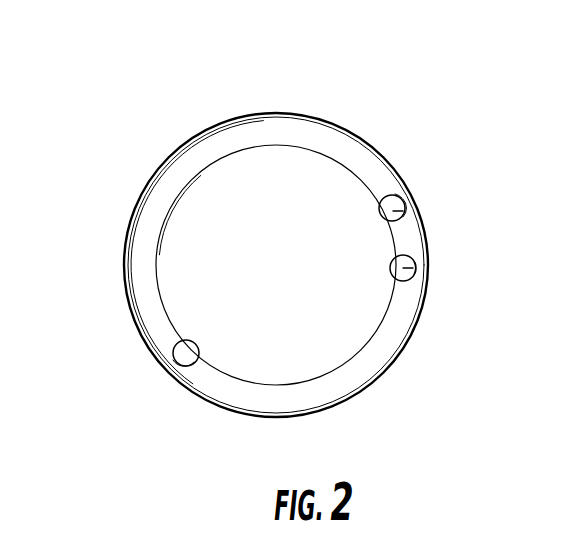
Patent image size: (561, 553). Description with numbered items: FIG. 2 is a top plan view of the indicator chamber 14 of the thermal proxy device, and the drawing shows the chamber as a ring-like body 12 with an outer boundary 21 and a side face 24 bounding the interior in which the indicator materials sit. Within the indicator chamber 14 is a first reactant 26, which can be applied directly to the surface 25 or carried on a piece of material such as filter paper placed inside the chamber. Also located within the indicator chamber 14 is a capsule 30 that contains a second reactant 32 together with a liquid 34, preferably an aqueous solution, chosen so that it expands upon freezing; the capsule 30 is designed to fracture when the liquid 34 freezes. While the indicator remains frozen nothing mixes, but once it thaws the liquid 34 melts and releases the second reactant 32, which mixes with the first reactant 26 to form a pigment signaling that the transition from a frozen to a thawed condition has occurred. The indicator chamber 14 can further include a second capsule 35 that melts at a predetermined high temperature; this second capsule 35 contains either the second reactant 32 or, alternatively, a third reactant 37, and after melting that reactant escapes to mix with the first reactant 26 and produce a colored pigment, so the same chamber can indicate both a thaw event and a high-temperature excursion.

The ring body 12 is at (165, 162).
The indicator chamber 14 is at (157, 245).
The outer surface 21 is at (265, 118).
The side face 24 is at (395, 194).
The surface 25 is at (373, 147).
The first reactant 26 is at (333, 160).
The capsule 30 is at (405, 268).
The second reactant 32 is at (406, 207).
The liquid 34 is at (392, 203).
The second capsule 35 is at (175, 381).
The third reactant 37 is at (176, 343).